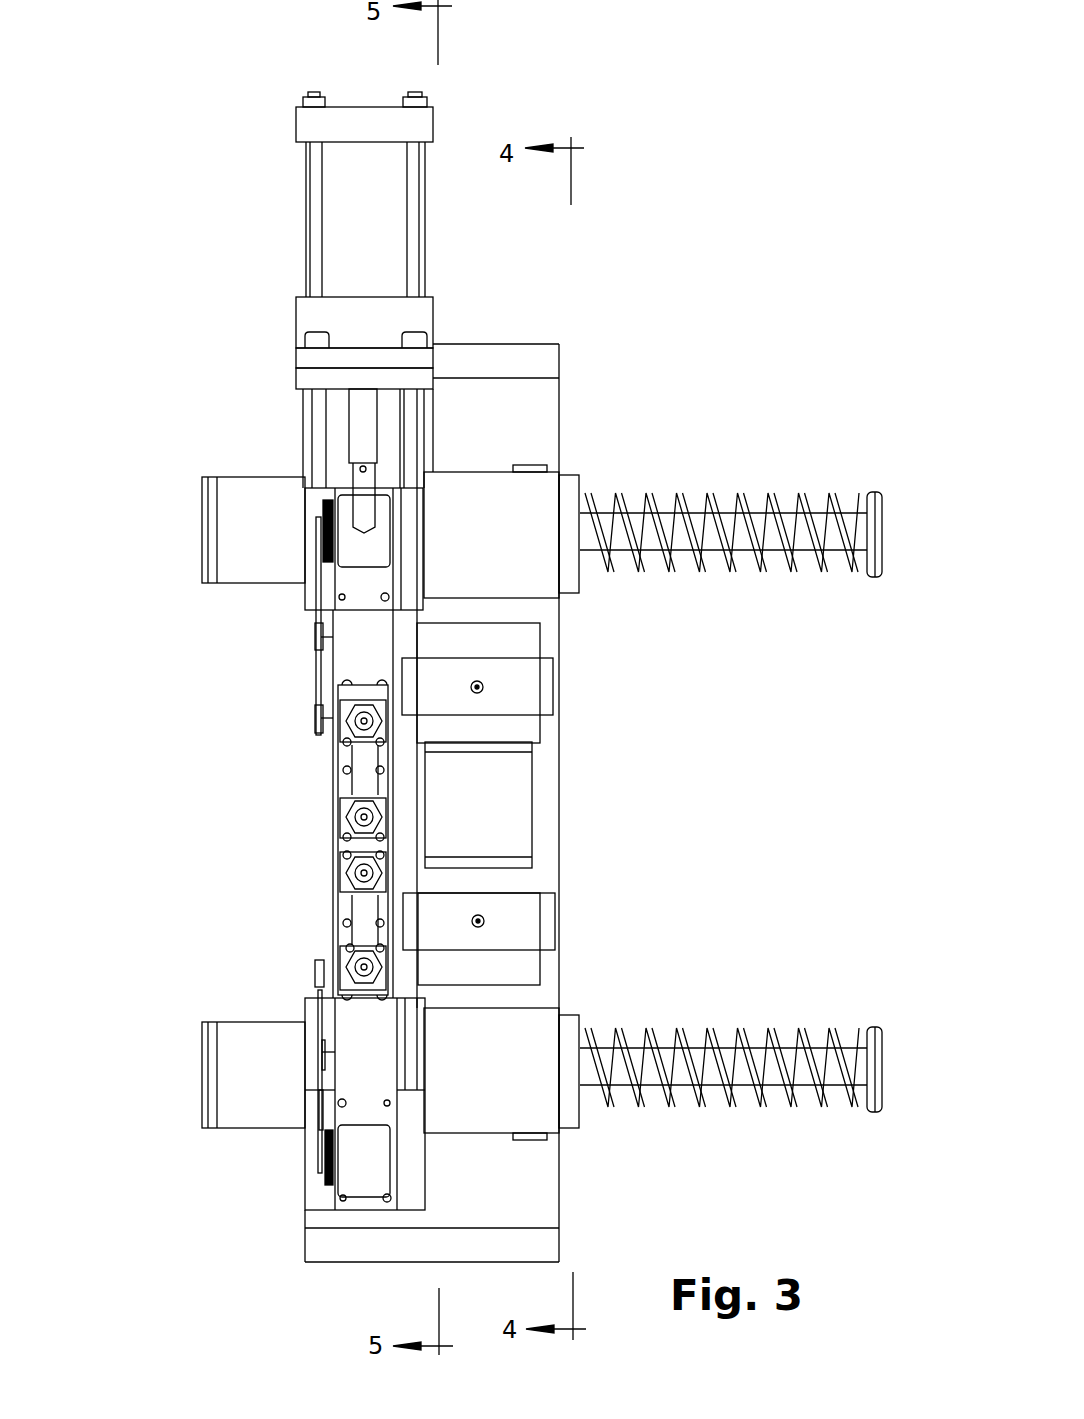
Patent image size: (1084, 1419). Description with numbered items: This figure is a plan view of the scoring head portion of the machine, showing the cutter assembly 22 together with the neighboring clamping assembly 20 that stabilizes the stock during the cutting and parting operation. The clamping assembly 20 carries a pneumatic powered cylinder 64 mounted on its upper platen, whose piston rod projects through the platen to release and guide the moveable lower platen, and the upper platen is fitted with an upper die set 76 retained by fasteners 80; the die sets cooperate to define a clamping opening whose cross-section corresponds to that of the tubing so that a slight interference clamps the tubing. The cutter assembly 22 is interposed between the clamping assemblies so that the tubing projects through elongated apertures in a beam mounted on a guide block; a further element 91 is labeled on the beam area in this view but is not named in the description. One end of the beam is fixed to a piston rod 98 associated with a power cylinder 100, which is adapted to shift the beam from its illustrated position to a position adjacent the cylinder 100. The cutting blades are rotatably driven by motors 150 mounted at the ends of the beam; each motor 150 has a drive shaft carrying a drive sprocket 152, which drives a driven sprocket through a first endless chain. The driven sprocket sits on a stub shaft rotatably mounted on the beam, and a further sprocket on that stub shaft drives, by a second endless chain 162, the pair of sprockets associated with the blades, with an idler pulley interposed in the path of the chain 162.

The clamping assembly 20 is at (512, 330).
The cutter assembly 22 is at (262, 1252).
The pneumatic powered cylinder 64 is at (518, 798).
The upper die set 76 is at (523, 674).
The fastener 80 is at (477, 681).
The lower clamp block 91 is at (365, 1205).
The piston rod 98 is at (360, 422).
The power cylinder 100 is at (342, 215).
The motor 150 is at (328, 507).
The drive sprocket 152 is at (313, 534).
The second endless chain 162 is at (320, 1107).